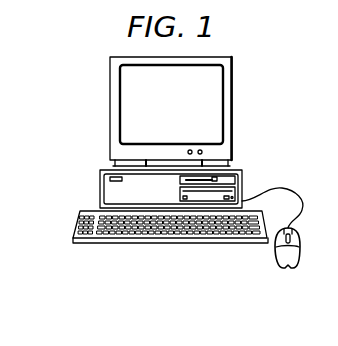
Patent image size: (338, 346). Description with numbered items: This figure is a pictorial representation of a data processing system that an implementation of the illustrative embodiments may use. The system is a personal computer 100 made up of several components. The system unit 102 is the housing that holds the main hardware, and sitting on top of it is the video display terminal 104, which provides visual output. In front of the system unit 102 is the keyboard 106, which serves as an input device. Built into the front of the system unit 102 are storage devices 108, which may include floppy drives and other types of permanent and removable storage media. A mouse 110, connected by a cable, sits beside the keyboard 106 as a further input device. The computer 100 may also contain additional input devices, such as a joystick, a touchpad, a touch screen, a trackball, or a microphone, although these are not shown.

The computer 100 is at (55, 95).
The system unit 102 is at (100, 181).
The video display terminal 104 is at (233, 108).
The keyboard 106 is at (97, 244).
The storage devices 108 is at (216, 178).
The mouse 110 is at (287, 270).